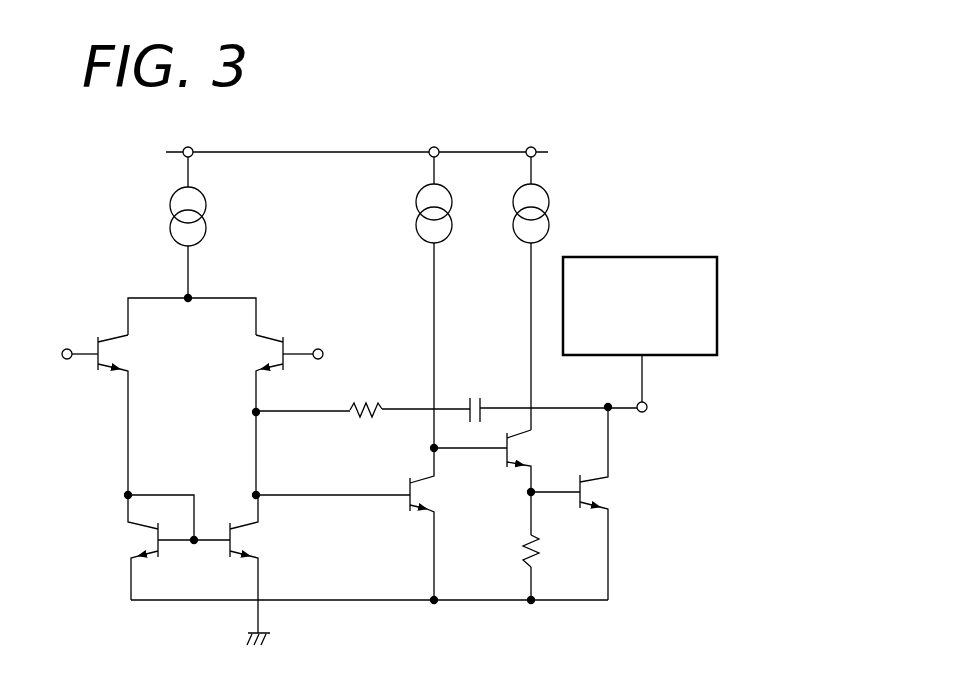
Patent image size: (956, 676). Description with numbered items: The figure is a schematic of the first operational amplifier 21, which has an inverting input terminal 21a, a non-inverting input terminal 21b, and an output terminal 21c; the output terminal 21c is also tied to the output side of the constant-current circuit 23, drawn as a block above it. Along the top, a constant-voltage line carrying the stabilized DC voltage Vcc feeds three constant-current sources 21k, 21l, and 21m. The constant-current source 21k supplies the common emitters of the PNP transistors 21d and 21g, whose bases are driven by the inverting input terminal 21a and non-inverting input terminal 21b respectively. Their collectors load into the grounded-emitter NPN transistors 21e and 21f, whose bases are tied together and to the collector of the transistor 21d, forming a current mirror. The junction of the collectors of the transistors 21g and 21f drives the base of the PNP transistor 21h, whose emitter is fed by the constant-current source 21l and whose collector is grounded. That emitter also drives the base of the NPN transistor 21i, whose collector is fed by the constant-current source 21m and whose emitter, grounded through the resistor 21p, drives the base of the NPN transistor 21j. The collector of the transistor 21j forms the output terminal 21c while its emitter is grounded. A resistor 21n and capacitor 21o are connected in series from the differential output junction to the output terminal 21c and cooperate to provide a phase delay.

The operational amplifier 21 is at (566, 135).
The inverting input terminal 21a is at (70, 348).
The non-inverting input terminal 21b is at (320, 348).
The output terminal 21c is at (650, 412).
The PNP transistor 21d is at (123, 353).
The PNP transistor 21g is at (253, 353).
The NPN transistor 21e is at (135, 540).
The NPN transistor 21f is at (253, 541).
The PNP transistor 21h is at (430, 497).
The NPN transistor 21i is at (527, 450).
The NPN transistor 21j is at (605, 490).
The constant-current source 21k is at (172, 200).
The constant-current source 21l is at (417, 198).
The constant-current source 21m is at (513, 198).
The resistor 21n is at (372, 397).
The capacitor 21o is at (475, 392).
The resistor 21p is at (538, 543).
The constant-current circuit 23 is at (663, 253).